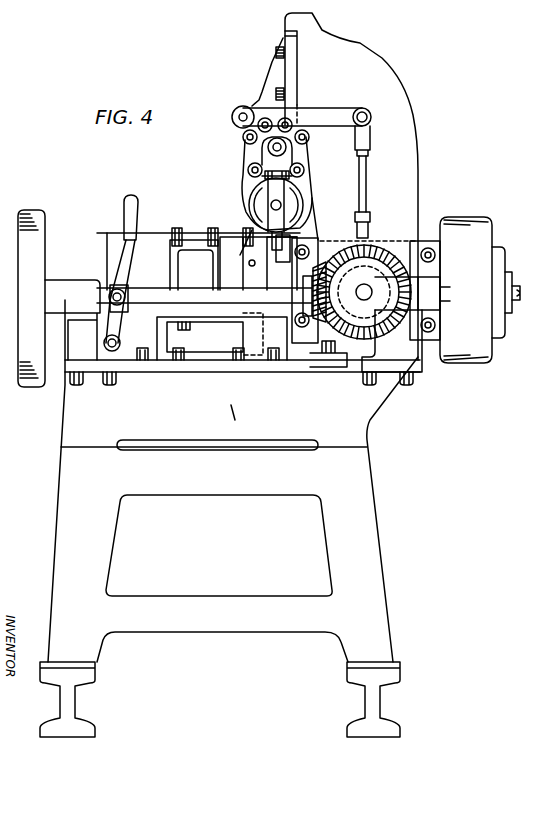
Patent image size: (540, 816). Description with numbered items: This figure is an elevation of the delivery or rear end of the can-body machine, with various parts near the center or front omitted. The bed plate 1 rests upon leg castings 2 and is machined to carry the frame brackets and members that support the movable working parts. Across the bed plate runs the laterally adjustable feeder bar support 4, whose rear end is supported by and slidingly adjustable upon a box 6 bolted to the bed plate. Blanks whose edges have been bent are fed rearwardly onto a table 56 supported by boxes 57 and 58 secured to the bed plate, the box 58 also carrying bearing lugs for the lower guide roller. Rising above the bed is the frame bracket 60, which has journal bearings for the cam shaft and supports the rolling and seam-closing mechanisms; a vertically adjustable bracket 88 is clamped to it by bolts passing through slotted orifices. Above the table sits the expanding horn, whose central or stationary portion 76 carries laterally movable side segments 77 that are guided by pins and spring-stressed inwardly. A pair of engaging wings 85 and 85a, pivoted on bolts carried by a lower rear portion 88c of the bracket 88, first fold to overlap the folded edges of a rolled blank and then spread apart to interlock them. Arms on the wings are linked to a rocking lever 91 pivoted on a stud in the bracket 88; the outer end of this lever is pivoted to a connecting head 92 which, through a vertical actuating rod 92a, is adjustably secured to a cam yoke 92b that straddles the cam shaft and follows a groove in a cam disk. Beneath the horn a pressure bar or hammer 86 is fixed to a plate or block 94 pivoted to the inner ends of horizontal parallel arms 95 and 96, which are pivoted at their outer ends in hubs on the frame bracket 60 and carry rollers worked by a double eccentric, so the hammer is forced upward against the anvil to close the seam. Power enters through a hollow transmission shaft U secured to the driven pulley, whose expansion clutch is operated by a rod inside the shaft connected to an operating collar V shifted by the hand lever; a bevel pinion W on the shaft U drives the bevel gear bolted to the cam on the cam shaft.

The bed plate 1 is at (372, 413).
The leg castings 2 is at (363, 480).
The feeder bar support 4 is at (219, 258).
The box 6 is at (241, 322).
The table 56 is at (98, 232).
The box 57 is at (107, 248).
The box 58 is at (264, 245).
The frame bracket 60 is at (408, 138).
The central or stationary portion of expanding horn 76 is at (275, 195).
The side segments 77 is at (260, 208).
The engaging wing 85 is at (243, 192).
The engaging wing 85a is at (310, 195).
The pressure bar or hammer 86 is at (274, 246).
The vertically adjustable bracket 88 is at (275, 82).
The lower rear portion of adjustable bracket 88c is at (270, 160).
The rocking lever 91 is at (313, 112).
The connecting head 92 is at (366, 132).
The vertical actuating rod 92a is at (366, 180).
The cam yoke 92b is at (371, 222).
The plate or block 94 is at (290, 263).
The arm 95 is at (317, 248).
The arm 96 is at (293, 335).
The hollow transmission shaft U is at (182, 296).
The operating collar V is at (128, 287).
The bevel pinion W is at (317, 332).